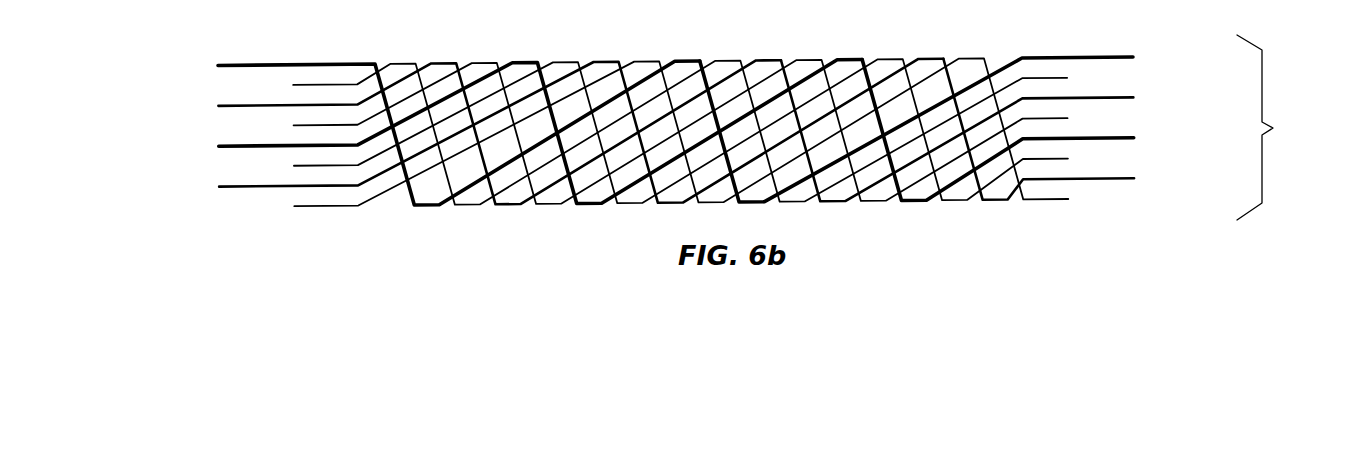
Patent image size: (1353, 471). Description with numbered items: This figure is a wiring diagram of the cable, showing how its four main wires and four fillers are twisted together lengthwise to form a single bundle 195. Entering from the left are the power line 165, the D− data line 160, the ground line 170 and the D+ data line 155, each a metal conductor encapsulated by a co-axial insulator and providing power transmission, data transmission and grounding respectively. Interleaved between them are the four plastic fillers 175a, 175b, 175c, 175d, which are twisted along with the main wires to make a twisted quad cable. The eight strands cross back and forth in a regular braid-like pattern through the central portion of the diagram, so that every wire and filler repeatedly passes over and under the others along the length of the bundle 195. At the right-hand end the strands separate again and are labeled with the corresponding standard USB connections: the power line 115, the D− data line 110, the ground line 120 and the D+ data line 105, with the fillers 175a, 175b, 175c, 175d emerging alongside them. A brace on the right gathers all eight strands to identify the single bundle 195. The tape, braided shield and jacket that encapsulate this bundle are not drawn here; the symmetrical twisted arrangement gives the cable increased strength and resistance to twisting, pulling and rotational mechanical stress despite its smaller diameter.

The power line 165 is at (414, 129).
The power line 115 is at (964, 125).
The filler 175a is at (676, 132).
The data line (D−) 160 is at (459, 133).
The data line (D−) 110 is at (1000, 128).
The filler 175b is at (676, 132).
The ground line 170 is at (485, 133).
The ground line 120 is at (1057, 128).
The filler 175c is at (676, 132).
The data line (D+) 155 is at (538, 133).
The data line (D+) 105 is at (1085, 128).
The filler 175d is at (679, 137).
The single bundle 195 is at (1273, 127).